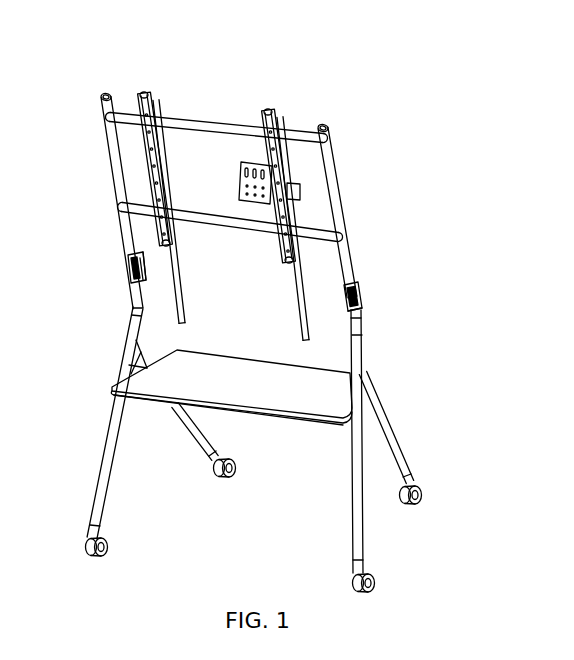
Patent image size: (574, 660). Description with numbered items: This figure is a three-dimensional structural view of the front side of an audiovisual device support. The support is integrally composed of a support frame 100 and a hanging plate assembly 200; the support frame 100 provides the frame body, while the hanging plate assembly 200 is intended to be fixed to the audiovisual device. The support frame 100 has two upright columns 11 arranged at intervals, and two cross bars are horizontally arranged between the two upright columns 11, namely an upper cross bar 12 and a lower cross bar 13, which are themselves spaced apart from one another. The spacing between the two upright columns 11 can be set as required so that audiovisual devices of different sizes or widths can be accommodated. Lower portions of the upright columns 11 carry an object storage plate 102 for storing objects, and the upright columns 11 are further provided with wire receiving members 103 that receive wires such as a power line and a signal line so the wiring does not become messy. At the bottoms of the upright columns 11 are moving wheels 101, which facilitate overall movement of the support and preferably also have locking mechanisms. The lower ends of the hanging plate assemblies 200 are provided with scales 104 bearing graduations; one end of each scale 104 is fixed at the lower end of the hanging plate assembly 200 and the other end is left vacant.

The support frame 100 is at (374, 327).
The moving wheels 101 is at (214, 478).
The object storage plates 102 is at (297, 408).
The wire receiving members 103 is at (126, 270).
The scales 104 is at (295, 290).
The upright columns 11 is at (348, 263).
The upper cross bar 12 is at (218, 127).
The lower cross bar 13 is at (230, 223).
The hanging plate assembly 200 is at (158, 98).